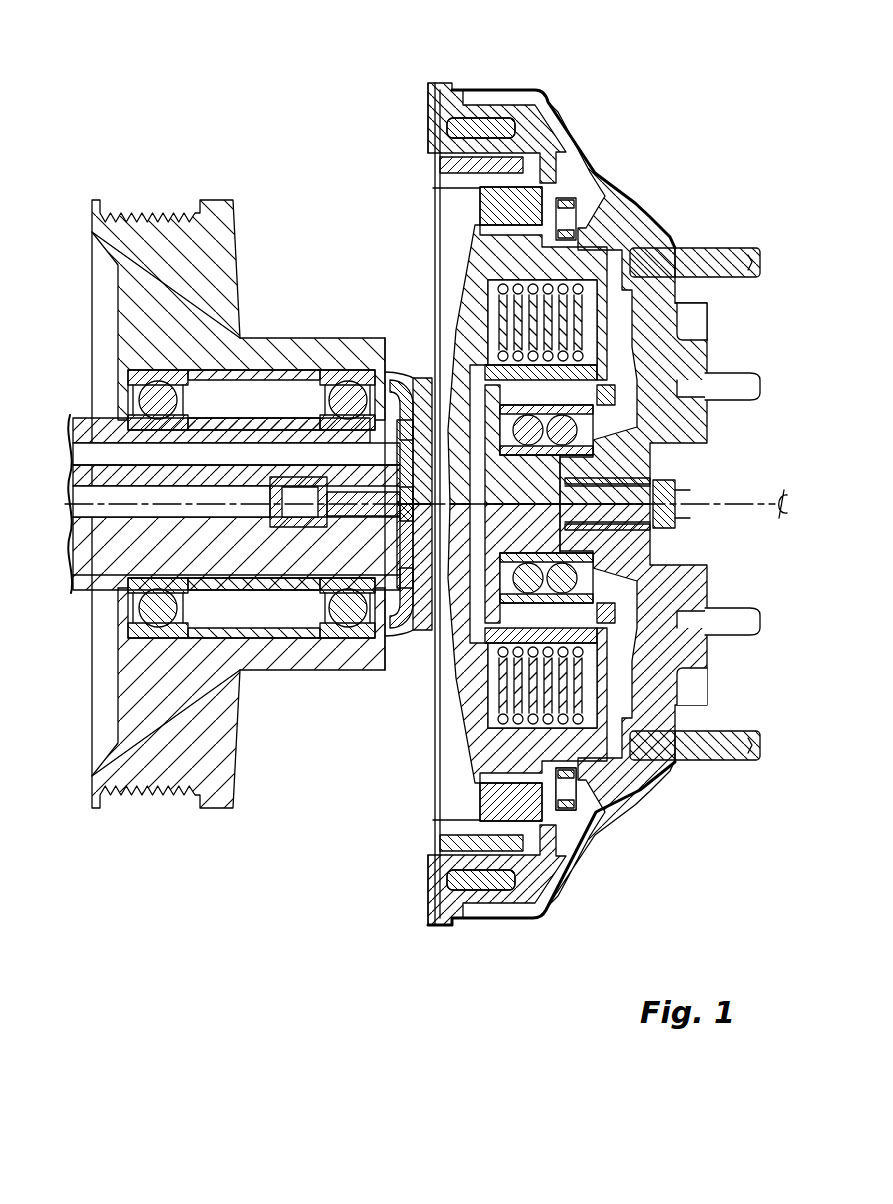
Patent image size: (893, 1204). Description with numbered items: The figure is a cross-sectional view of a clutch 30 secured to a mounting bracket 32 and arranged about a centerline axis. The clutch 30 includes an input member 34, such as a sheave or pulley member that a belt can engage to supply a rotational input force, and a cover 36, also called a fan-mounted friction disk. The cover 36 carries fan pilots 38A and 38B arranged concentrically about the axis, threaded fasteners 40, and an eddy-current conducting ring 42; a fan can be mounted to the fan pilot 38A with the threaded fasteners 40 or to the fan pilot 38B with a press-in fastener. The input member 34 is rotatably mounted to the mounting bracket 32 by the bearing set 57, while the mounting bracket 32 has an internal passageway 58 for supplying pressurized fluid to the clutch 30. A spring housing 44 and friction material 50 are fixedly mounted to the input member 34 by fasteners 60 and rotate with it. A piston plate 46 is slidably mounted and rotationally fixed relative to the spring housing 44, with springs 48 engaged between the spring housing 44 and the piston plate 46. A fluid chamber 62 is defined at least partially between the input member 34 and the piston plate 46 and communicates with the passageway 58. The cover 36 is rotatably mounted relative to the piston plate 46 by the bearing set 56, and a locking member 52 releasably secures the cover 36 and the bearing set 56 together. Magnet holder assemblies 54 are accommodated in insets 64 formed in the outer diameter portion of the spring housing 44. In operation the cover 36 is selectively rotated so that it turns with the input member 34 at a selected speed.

The clutch 30 is at (625, 195).
The mounting bracket 32 is at (100, 548).
The input member 34 is at (210, 205).
The cover 36 is at (590, 215).
The fan pilot 38A is at (690, 302).
The fan pilot 38B is at (700, 380).
The threaded fasteners 40 is at (718, 248).
The eddy-current conducting ring 42 is at (490, 130).
The spring housing 44 is at (597, 667).
The piston plate 46 is at (470, 667).
The springs 48 is at (505, 310).
The friction material 50 is at (590, 818).
The locking member 52 is at (665, 478).
The magnet holder assemblies 54 is at (447, 175).
The bearing set 56 is at (600, 415).
The bearing set 57 is at (170, 607).
The internal passageway 58 is at (92, 492).
The fasteners 60 is at (498, 215).
The fluid chamber 62 is at (447, 322).
The insets 64 is at (542, 773).